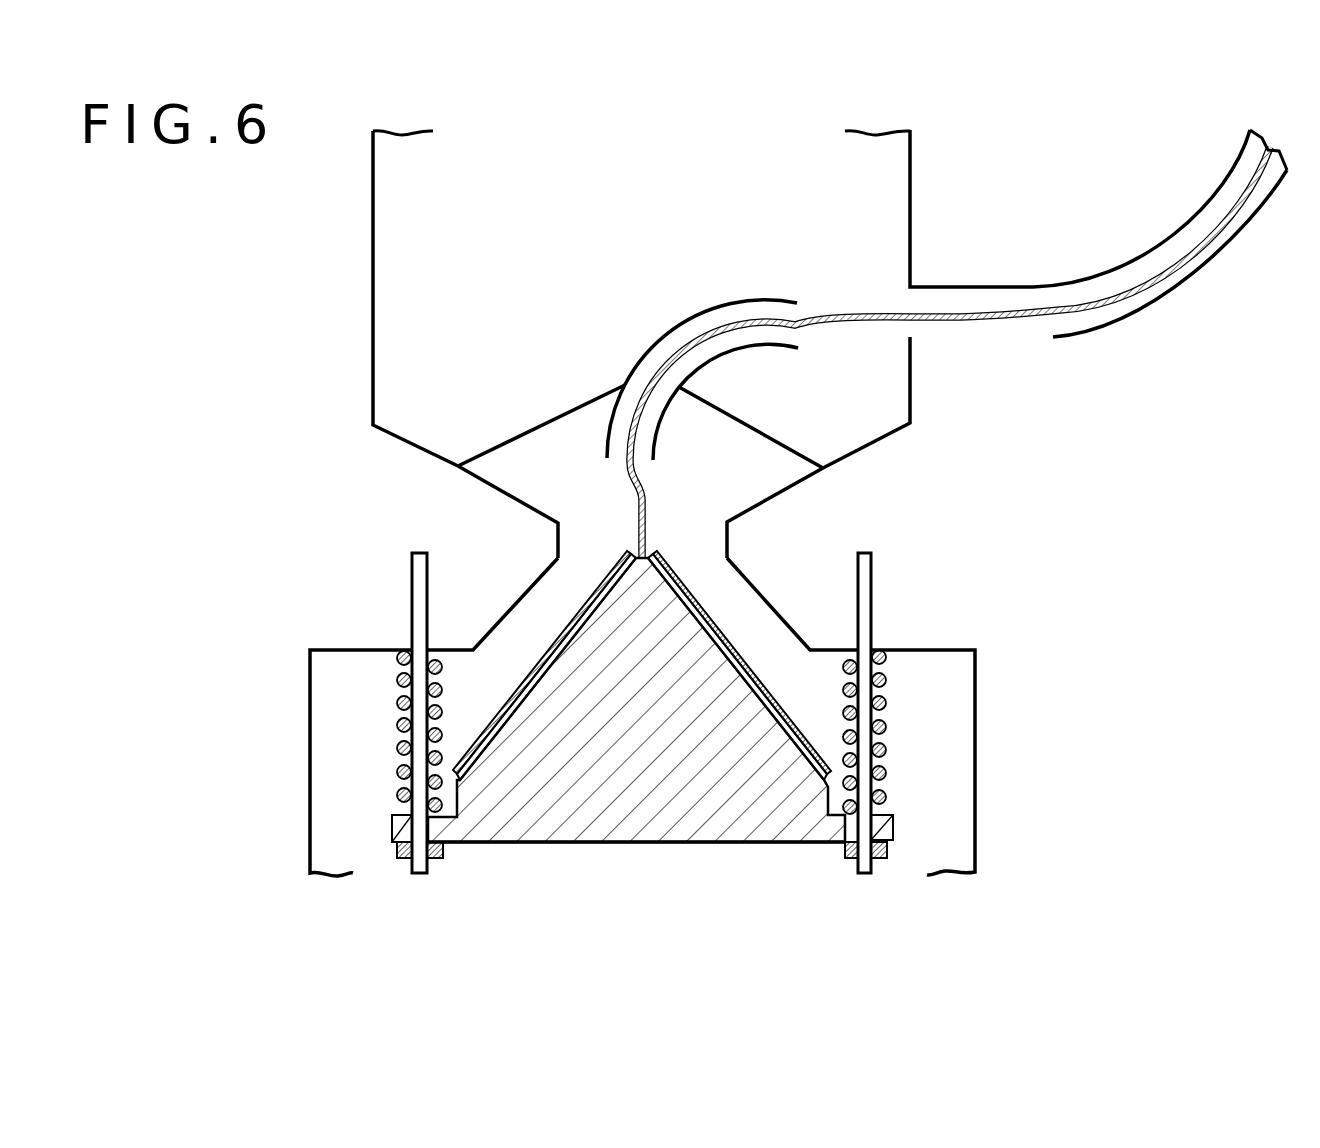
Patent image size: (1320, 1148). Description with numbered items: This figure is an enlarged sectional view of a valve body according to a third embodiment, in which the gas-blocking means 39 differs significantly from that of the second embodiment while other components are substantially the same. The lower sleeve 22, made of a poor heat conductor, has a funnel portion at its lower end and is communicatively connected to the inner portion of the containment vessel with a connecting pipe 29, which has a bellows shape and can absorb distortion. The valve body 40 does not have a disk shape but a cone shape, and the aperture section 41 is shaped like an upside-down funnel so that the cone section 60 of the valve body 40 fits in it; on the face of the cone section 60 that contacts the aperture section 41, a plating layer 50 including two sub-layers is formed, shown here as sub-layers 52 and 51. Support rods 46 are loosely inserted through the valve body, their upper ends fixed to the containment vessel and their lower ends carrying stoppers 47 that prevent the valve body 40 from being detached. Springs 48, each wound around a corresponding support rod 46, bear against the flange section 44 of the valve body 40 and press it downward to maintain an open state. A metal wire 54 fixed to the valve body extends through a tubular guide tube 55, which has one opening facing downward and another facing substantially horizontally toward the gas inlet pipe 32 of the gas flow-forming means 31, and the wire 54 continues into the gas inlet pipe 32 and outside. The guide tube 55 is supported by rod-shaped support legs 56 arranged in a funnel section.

The lower sleeve 22 is at (910, 183).
The wire 54 is at (841, 300).
The guide tube 55 is at (687, 328).
The support legs 56 is at (772, 436).
The gas inlet pipe 32 is at (1058, 337).
The gas flow-forming means 31 is at (1150, 317).
The support rods 46 is at (412, 555).
The aperture section 41 is at (488, 632).
The connecting pipe 29 is at (733, 550).
The reflective film 52 is at (707, 618).
The plating layer 50 is at (972, 542).
The adhesive layer 51 is at (732, 645).
The cone section 60 is at (547, 740).
The gas-blocking means 39 is at (1007, 732).
The springs 48 is at (396, 750).
The flange section 44 is at (395, 818).
The valve body 40 is at (600, 845).
The stoppers 47 is at (847, 858).